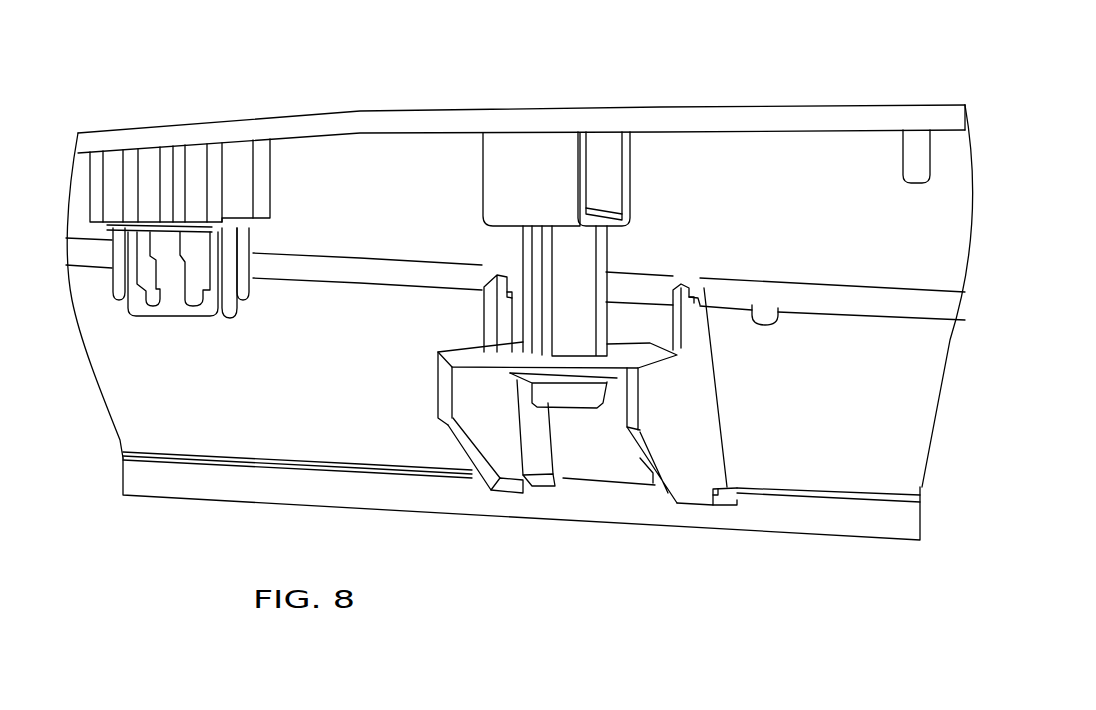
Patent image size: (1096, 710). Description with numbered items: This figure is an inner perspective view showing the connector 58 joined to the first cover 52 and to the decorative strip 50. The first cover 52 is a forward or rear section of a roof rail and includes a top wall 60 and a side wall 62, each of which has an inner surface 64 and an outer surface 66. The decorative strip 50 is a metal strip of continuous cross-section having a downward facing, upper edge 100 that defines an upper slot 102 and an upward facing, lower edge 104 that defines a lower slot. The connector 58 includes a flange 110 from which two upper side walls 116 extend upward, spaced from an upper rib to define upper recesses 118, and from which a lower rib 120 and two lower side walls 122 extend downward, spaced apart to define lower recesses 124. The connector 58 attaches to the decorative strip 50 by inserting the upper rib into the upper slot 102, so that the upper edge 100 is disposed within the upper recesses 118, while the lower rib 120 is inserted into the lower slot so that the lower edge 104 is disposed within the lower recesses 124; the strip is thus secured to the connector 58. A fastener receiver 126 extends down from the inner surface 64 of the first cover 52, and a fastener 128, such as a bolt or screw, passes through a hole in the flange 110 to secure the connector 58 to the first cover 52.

The decorative strip 50 is at (863, 467).
The first cover 52 is at (720, 105).
The connector 58 is at (678, 426).
The top wall 60 is at (850, 121).
The side wall 62 is at (407, 153).
The inner surface 64 is at (450, 170).
The outer surface 66 is at (253, 97).
The upper edge 100 is at (912, 300).
The upper slot 102 is at (754, 308).
The lower edge 104 is at (277, 462).
The flange 110 is at (650, 356).
The upper side walls 116 is at (488, 312).
The upper recesses 118 is at (508, 293).
The lower rib 120 is at (585, 453).
The lower side walls 122 is at (472, 462).
The lower recesses 124 is at (724, 494).
The fastener receiver 126 is at (568, 323).
The fastener 128 is at (547, 395).